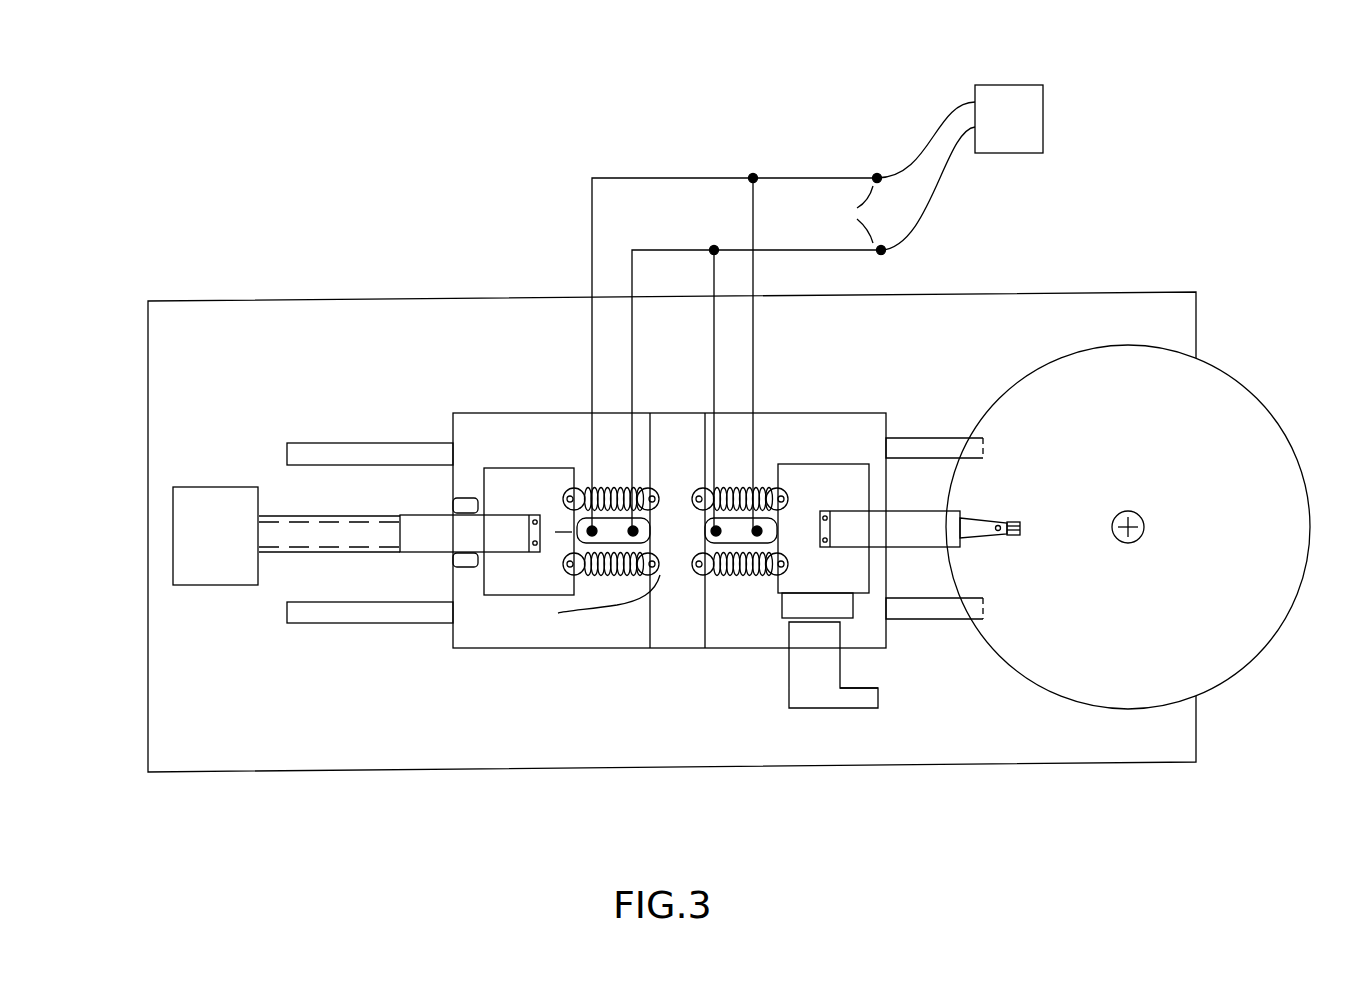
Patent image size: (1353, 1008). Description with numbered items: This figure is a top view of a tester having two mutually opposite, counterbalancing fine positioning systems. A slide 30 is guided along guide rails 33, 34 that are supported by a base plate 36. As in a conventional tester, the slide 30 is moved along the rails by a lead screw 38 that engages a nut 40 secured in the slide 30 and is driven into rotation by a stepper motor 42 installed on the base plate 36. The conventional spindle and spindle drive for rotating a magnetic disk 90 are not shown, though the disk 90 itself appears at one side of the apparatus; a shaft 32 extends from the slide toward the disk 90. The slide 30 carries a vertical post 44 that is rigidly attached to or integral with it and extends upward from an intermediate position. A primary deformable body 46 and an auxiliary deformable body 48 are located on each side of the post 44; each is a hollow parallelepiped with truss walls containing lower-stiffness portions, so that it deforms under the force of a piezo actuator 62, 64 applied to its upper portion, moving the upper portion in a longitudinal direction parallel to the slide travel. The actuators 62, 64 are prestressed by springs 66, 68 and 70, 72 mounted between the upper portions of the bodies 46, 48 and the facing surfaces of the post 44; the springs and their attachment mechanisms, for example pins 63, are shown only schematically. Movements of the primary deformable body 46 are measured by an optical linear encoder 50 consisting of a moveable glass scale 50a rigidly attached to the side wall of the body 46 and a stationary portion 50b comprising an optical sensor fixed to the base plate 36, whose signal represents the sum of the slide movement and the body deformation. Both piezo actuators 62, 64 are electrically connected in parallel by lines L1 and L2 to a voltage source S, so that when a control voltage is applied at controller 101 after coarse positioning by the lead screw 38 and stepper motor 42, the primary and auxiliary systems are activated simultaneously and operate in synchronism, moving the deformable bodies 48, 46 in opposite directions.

The slide 30 is at (505, 622).
The output shaft 32 is at (963, 525).
The guide rail 33 is at (930, 447).
The guide rail 34 is at (933, 610).
The base plate 36 is at (218, 688).
The lead screw 38 is at (292, 533).
The nut 40 is at (462, 507).
The stepper motor 42 is at (197, 510).
The vertical post 44 is at (683, 598).
The primary deformable body 46 is at (815, 492).
The auxiliary deformable body 48 is at (518, 492).
The optical linear encoder 50 is at (872, 718).
The moveable portion 50a is at (842, 608).
The stationary portion 50b is at (828, 708).
The piezo actuator 62 is at (607, 533).
The pin 63 is at (558, 613).
The piezo actuator 64 is at (728, 535).
The spring 66 is at (617, 577).
The spring 68 is at (640, 483).
The spring 70 is at (758, 578).
The spring 72 is at (762, 483).
The magnetic disk 90 is at (1252, 417).
The controller 101 is at (1045, 107).
The line L1 is at (620, 178).
The line L2 is at (647, 250).
The voltage source S is at (854, 214).